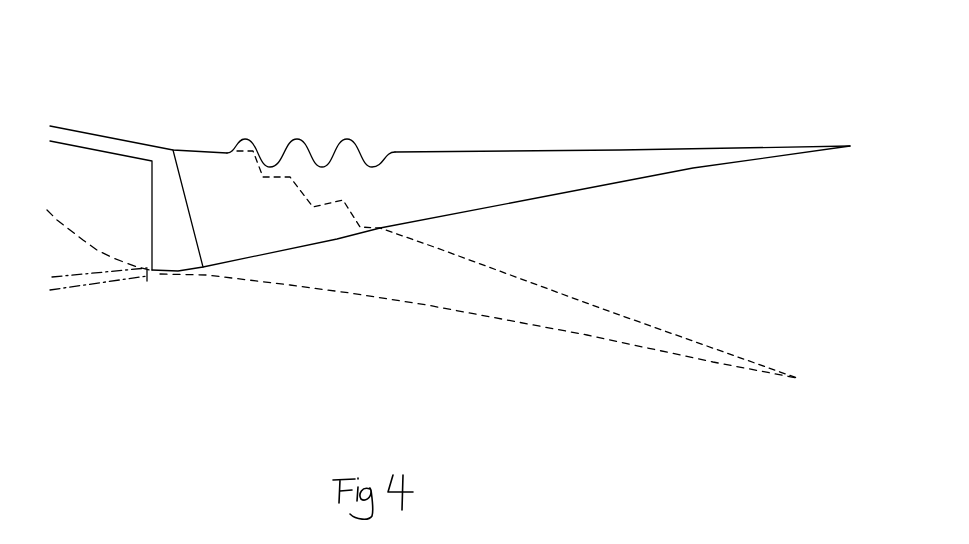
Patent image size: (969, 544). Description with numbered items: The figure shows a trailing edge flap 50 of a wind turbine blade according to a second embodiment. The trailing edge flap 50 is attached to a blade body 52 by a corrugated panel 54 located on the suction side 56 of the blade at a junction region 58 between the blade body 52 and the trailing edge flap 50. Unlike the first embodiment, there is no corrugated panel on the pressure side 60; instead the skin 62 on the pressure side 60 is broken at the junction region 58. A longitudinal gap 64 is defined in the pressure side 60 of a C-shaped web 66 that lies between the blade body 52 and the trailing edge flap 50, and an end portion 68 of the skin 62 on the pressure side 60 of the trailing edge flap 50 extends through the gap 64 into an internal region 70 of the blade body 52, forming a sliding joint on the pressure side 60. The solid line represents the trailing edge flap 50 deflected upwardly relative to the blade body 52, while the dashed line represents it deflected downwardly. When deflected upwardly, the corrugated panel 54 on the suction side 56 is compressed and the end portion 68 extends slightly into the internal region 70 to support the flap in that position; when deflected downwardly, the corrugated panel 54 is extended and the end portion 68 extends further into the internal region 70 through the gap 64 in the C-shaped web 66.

The trailing edge flap 50 is at (667, 157).
The blade body 52 is at (92, 167).
The corrugated panel 54 is at (297, 140).
The suction side 56 is at (475, 86).
The junction region 58 is at (270, 142).
The pressure side 60 is at (425, 350).
The skin 62 is at (470, 208).
The longitudinal gap 64 is at (152, 278).
The C-shaped web 66 is at (74, 282).
The end portion 68 is at (98, 252).
The internal region 70 is at (92, 192).